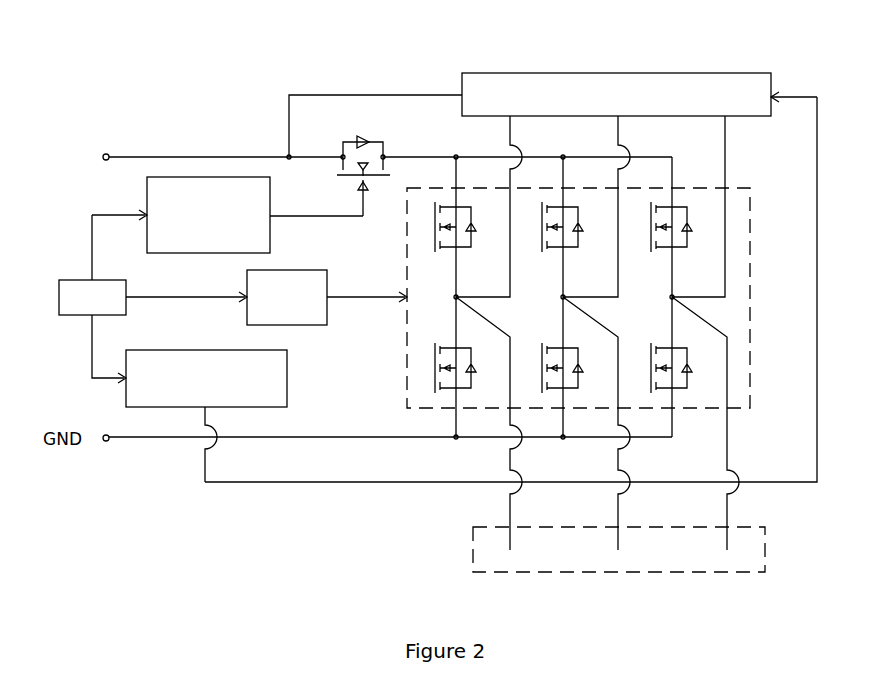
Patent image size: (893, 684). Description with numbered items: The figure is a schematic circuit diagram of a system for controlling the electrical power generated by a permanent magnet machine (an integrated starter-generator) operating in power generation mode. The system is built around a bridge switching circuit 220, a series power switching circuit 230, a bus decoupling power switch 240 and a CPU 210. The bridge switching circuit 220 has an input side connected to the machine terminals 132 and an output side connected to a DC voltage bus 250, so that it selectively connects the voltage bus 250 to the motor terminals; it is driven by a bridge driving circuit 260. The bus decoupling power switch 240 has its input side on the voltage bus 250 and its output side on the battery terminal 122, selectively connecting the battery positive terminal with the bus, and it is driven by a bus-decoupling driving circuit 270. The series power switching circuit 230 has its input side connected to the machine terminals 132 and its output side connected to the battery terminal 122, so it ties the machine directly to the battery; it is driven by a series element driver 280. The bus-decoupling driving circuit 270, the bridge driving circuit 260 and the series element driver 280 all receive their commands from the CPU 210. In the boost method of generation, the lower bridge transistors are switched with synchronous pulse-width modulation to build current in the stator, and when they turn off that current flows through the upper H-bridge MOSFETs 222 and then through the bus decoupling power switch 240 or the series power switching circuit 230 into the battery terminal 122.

The battery terminal 122 is at (108, 153).
The machine terminals 132 is at (748, 541).
The CPU 210 is at (77, 318).
The bridge switching circuit 220 is at (640, 353).
The upper H-bridge MOSFETs 222 is at (690, 232).
The series power switching circuit 230 is at (628, 73).
The bus decoupling power switch 240 is at (355, 140).
The voltage bus 250 is at (478, 155).
The bridge driving circuit 260 is at (340, 299).
The bus-decoupling driving circuit 270 is at (218, 177).
The series element driver 280 is at (287, 370).